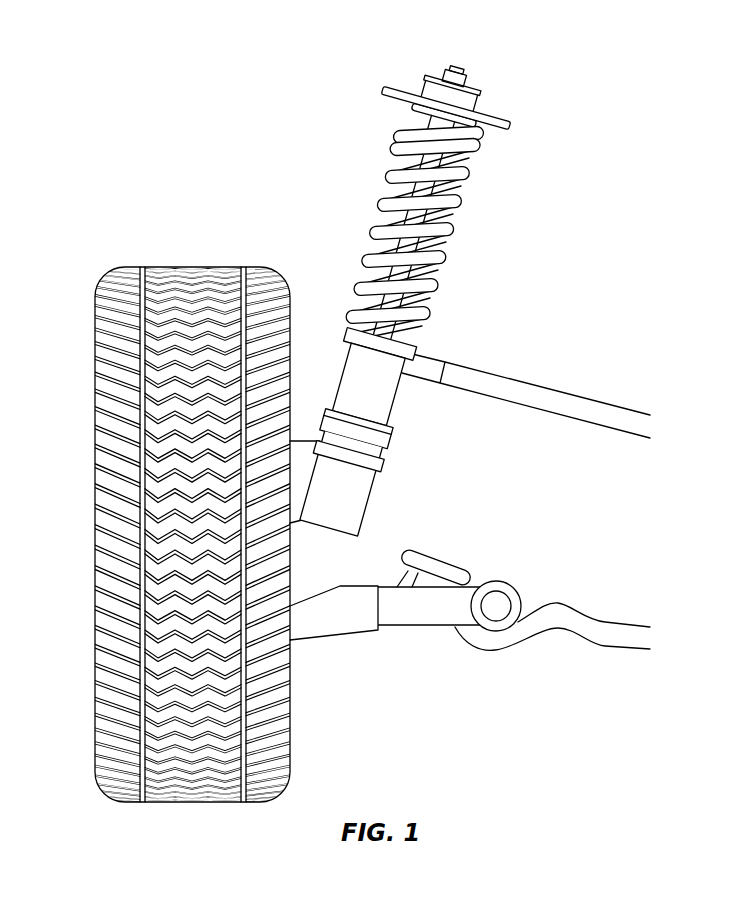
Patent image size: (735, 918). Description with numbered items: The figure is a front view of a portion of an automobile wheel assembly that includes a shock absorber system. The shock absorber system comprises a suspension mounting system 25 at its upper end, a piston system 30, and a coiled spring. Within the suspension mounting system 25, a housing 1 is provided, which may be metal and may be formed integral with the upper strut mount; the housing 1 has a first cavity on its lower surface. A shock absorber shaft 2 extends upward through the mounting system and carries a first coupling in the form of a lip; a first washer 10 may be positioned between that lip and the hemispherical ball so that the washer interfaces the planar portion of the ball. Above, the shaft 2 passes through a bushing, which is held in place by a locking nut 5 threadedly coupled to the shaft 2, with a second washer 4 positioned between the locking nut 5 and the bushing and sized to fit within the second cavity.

The housing 1 is at (471, 105).
The shock absorber shaft 2 is at (447, 135).
The second washer 4 is at (481, 92).
The locking nut 5 is at (469, 81).
The first washer 10 is at (420, 116).
The suspension mounting system 25 is at (406, 286).
The piston system 30 is at (372, 418).